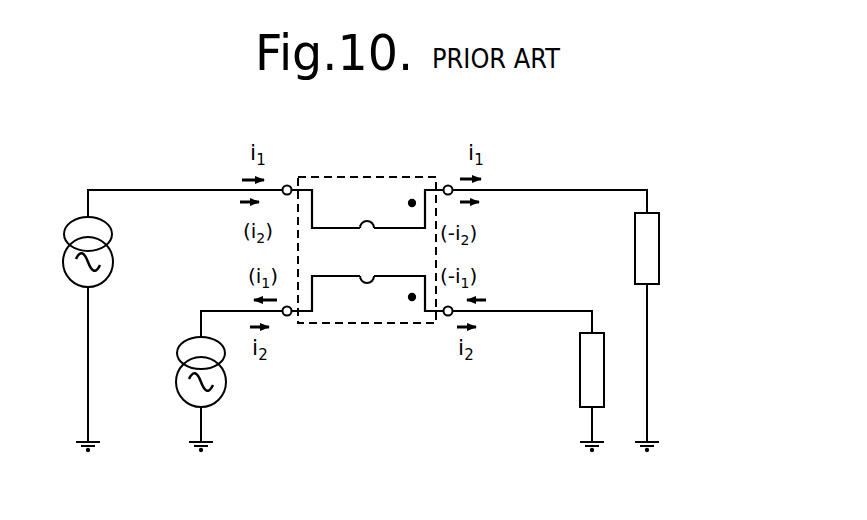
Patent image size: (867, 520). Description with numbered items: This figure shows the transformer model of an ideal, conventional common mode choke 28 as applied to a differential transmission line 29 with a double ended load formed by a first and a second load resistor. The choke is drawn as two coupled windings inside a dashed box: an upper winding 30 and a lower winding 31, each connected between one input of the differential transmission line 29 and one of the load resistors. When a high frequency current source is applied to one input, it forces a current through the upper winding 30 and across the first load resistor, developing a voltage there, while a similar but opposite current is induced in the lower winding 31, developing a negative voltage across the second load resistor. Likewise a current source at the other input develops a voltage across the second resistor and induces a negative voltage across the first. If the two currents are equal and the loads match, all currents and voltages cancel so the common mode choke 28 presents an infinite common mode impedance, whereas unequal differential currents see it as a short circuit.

The common mode choke 28 is at (560, 145).
The differential transmission line 29 is at (157, 450).
The upper winding 30 is at (378, 192).
The lower winding 31 is at (382, 300).